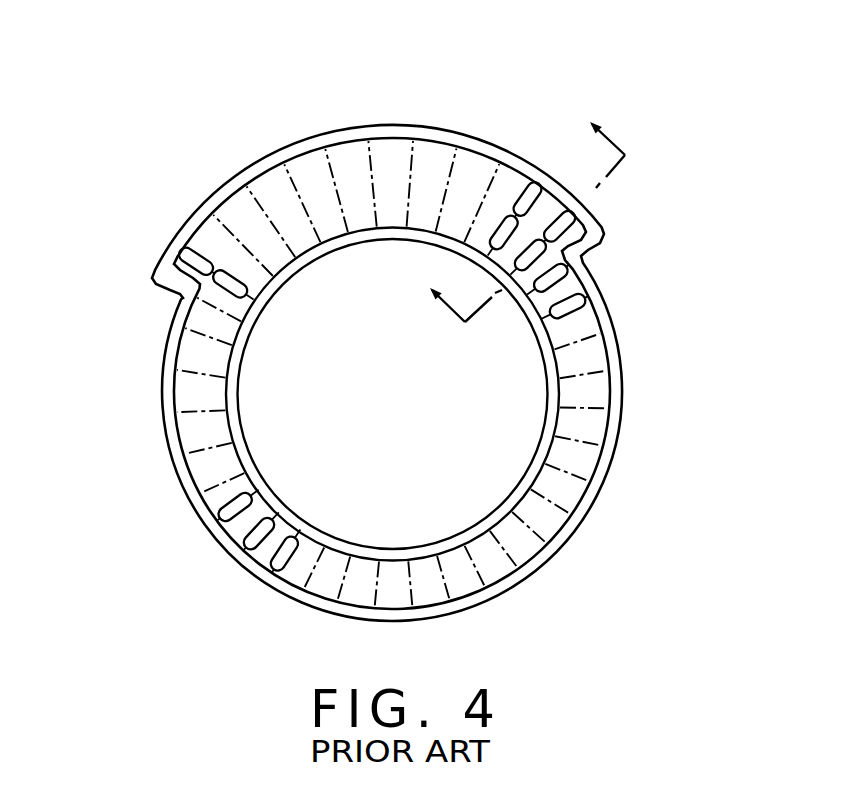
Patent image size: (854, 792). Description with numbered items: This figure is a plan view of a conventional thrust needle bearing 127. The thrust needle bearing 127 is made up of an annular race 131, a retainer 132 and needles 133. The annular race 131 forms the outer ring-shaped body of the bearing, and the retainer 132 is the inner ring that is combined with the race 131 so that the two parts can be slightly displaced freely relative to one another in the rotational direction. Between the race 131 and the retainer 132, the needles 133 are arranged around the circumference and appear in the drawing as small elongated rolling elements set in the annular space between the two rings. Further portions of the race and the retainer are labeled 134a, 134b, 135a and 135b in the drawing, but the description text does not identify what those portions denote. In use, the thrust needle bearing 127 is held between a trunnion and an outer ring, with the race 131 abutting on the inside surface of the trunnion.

The thrust needle bearing 127 is at (397, 114).
The annular race 131 is at (165, 282).
The retainer 132 is at (572, 530).
The needles 133 is at (561, 204).
The yoke portion 134a is at (602, 474).
The yoke portion 134b is at (602, 353).
The magnet pole portion 135a is at (339, 146).
The magnet pole portion 135b is at (254, 166).